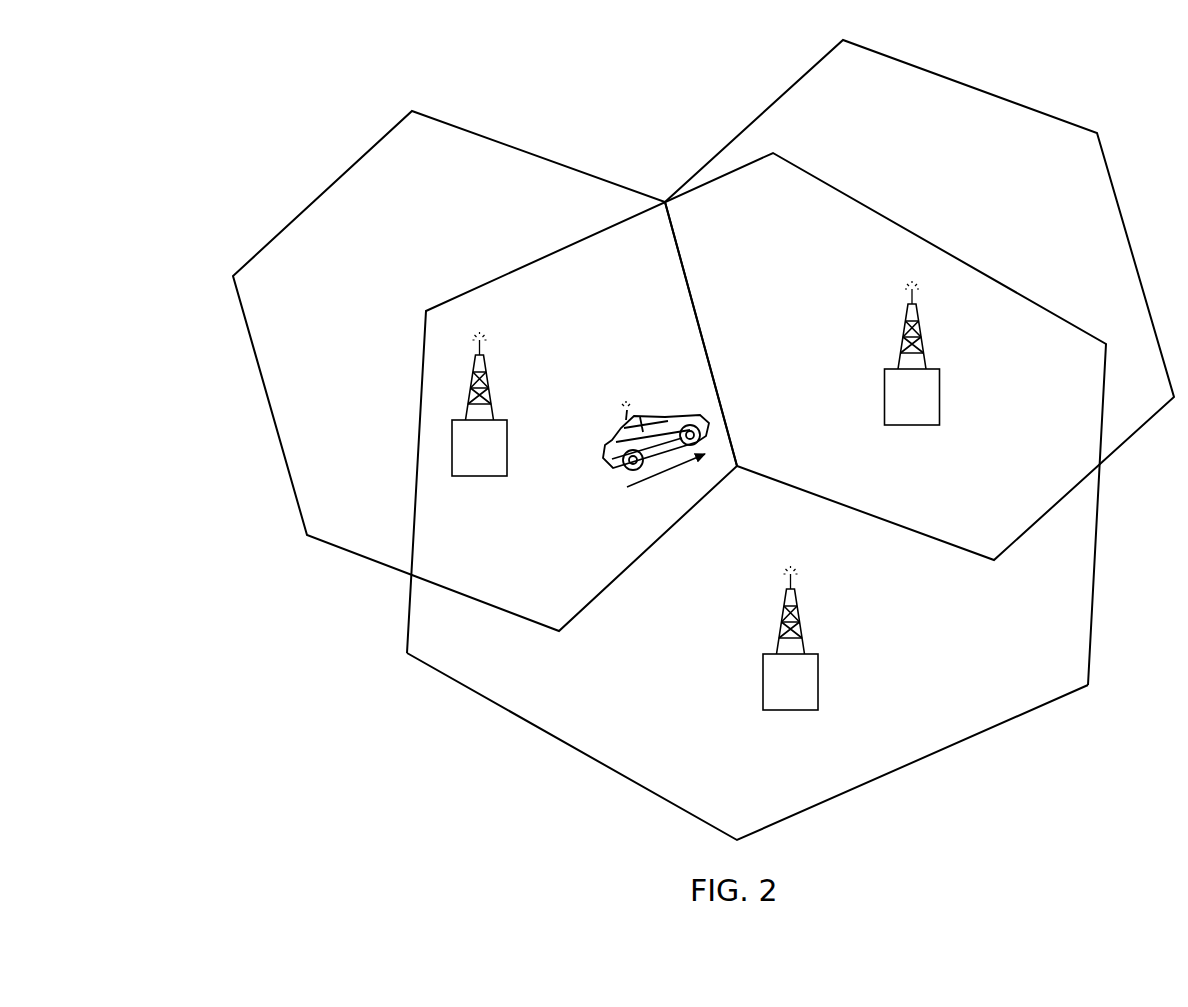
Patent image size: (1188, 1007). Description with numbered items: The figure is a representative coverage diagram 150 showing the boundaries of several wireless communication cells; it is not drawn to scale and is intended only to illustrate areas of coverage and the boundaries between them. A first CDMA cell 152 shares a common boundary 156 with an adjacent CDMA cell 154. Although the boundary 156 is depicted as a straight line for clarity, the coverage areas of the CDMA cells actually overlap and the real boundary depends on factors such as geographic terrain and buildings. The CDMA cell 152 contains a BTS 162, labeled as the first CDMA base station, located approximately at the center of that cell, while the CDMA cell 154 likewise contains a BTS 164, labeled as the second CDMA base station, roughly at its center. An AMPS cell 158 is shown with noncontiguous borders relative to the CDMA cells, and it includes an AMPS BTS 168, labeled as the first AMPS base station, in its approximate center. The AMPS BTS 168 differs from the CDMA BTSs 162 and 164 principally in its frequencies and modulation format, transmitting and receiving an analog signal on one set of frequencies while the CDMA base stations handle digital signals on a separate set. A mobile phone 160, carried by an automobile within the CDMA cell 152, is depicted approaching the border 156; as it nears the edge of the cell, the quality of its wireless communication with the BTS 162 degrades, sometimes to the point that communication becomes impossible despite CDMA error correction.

The coverage diagram 150 is at (296, 667).
The first CDMA cell 152 is at (523, 148).
The adjacent CDMA cell 154 is at (1052, 115).
The common boundary 156 is at (699, 311).
The AMPS cell 158 is at (513, 716).
The mobile phone 160 is at (603, 443).
The BTS (CDMA BTS-1) 162 is at (490, 388).
The BTS (CDMA BTS-2) 164 is at (922, 337).
The AMPS BTS (AMPS BTS-1) 168 is at (802, 623).